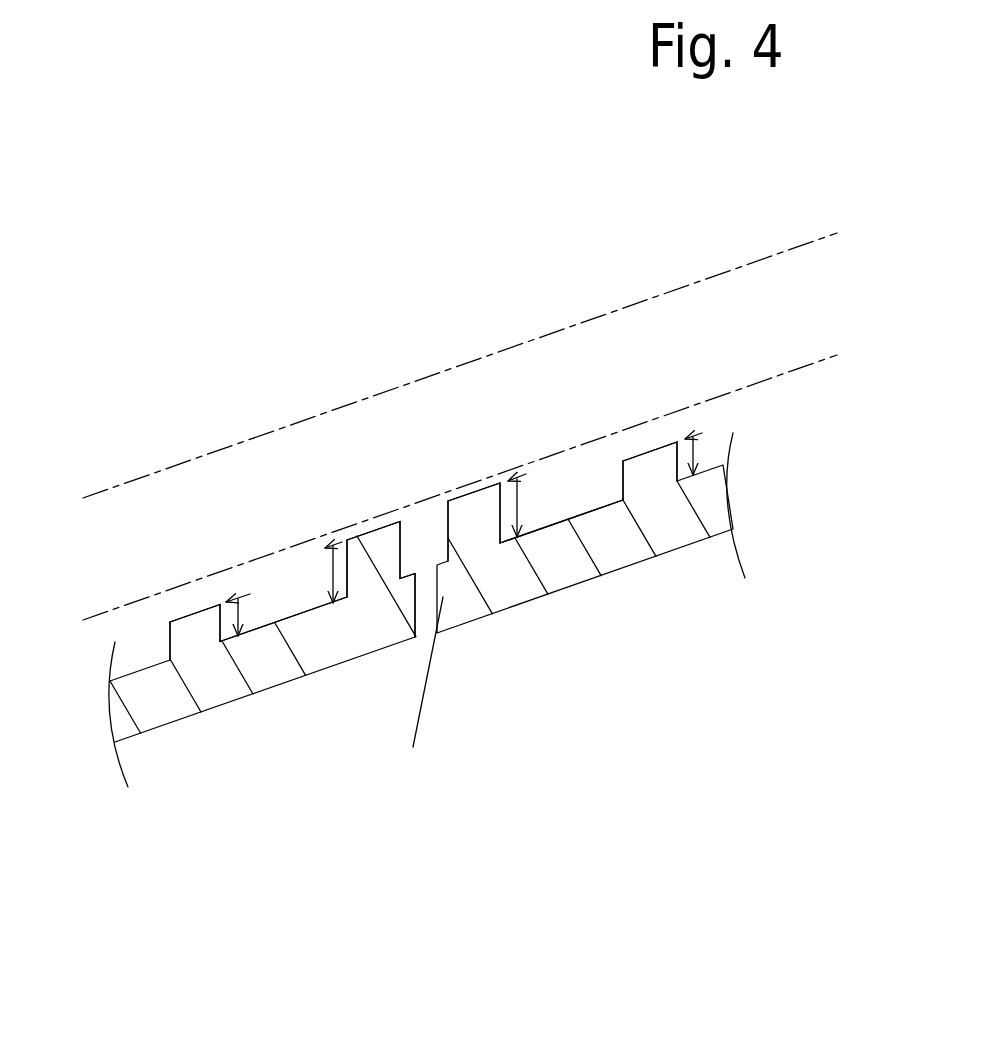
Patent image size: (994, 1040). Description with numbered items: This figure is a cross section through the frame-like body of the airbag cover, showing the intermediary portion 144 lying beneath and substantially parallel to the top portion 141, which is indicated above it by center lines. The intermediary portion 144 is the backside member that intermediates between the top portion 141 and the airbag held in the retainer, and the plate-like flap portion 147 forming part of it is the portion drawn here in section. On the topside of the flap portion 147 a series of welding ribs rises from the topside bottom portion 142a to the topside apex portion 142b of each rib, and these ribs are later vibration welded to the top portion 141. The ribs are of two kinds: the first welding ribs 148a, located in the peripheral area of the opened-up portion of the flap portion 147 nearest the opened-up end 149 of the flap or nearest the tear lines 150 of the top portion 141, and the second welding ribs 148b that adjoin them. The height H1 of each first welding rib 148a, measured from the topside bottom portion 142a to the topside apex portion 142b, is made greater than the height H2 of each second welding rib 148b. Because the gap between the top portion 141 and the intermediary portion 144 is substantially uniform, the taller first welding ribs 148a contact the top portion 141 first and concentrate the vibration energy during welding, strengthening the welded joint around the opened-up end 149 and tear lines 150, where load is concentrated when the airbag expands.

The top portion 141 is at (556, 330).
The topside bottom portion 142a is at (267, 621).
The topside apex portion 142b is at (178, 616).
The intermediary portion 144 is at (148, 745).
The flap portion 147 is at (213, 714).
The first welding rib 148a is at (405, 550).
The second welding rib 148b is at (212, 603).
The opened-up end 149 is at (414, 410).
The tear line 150 is at (404, 548).
The height of first welding rib H1 is at (334, 606).
The height of second welding rib H2 is at (250, 622).